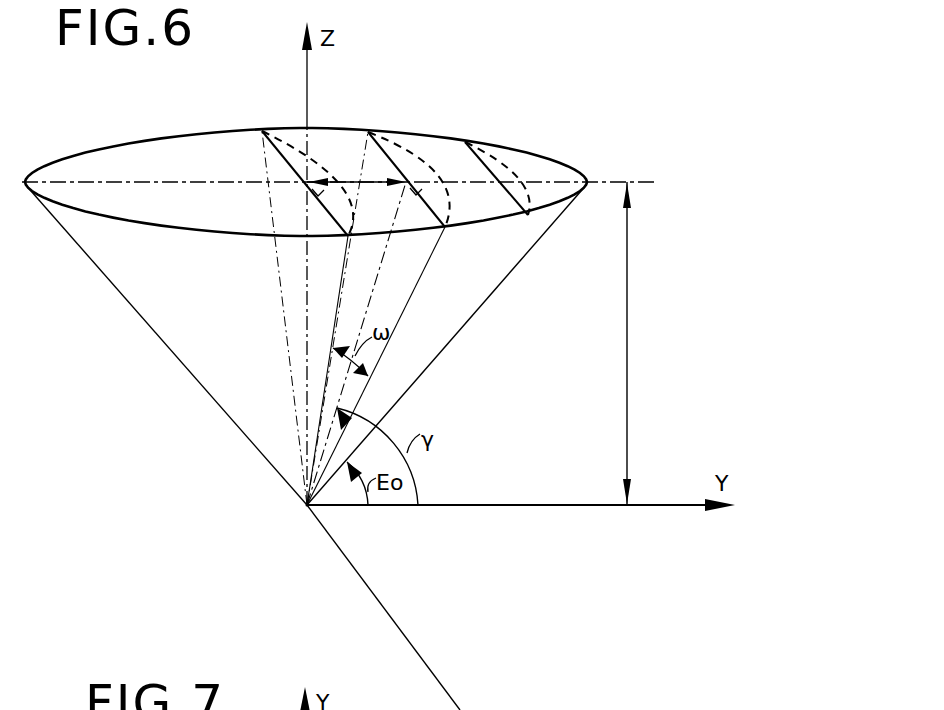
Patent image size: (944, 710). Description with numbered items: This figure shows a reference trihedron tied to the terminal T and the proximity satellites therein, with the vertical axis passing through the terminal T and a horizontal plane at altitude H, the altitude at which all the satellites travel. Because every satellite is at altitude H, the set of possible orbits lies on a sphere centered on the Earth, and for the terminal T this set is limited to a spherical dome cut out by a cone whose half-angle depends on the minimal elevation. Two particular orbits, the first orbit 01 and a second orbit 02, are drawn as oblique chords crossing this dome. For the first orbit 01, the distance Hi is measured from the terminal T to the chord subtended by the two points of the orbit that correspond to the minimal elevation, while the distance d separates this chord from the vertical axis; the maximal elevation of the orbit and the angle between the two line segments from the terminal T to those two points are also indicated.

The first orbit 01 is at (418, 152).
The second orbit 02 is at (506, 168).
The altitude H is at (636, 343).
The distance from terminal to chord Hi is at (356, 343).
The distance from chord to axis d is at (356, 178).
The terminal T is at (292, 511).